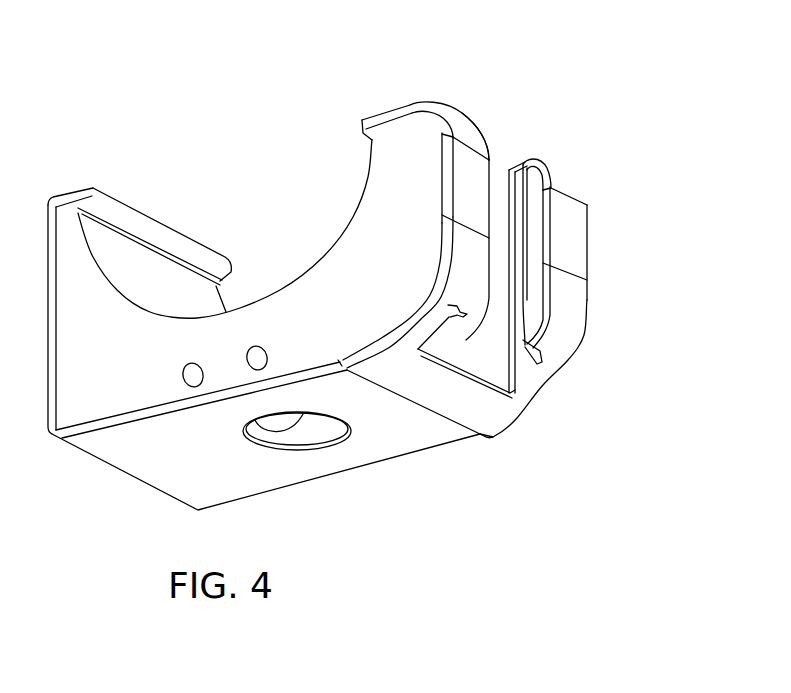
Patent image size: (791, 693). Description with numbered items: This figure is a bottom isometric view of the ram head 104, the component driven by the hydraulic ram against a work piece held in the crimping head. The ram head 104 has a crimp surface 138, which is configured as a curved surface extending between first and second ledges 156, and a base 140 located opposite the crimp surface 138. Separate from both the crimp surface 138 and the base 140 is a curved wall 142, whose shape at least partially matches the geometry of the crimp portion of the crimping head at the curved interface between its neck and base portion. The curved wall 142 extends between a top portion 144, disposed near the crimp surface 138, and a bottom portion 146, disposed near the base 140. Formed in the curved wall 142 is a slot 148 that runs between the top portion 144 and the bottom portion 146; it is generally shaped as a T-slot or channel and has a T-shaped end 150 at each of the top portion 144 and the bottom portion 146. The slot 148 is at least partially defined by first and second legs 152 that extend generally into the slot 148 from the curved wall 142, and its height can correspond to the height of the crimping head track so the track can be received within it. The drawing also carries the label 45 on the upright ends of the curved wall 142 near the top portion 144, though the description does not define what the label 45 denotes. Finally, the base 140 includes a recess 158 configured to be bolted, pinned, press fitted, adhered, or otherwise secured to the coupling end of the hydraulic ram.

The ram head 104 is at (575, 125).
The crimp surface 138 is at (108, 257).
The base 140 is at (148, 463).
The curved wall 142 is at (562, 321).
The top portion 144 is at (478, 119).
The bottom portion 146 is at (484, 397).
The slot 148 is at (502, 256).
The T-shaped end 150 is at (463, 375).
The first and second legs 152 is at (443, 324).
The first and second ledges 156 is at (202, 253).
The recess 158 is at (304, 438).
The arm end 45 is at (466, 132).